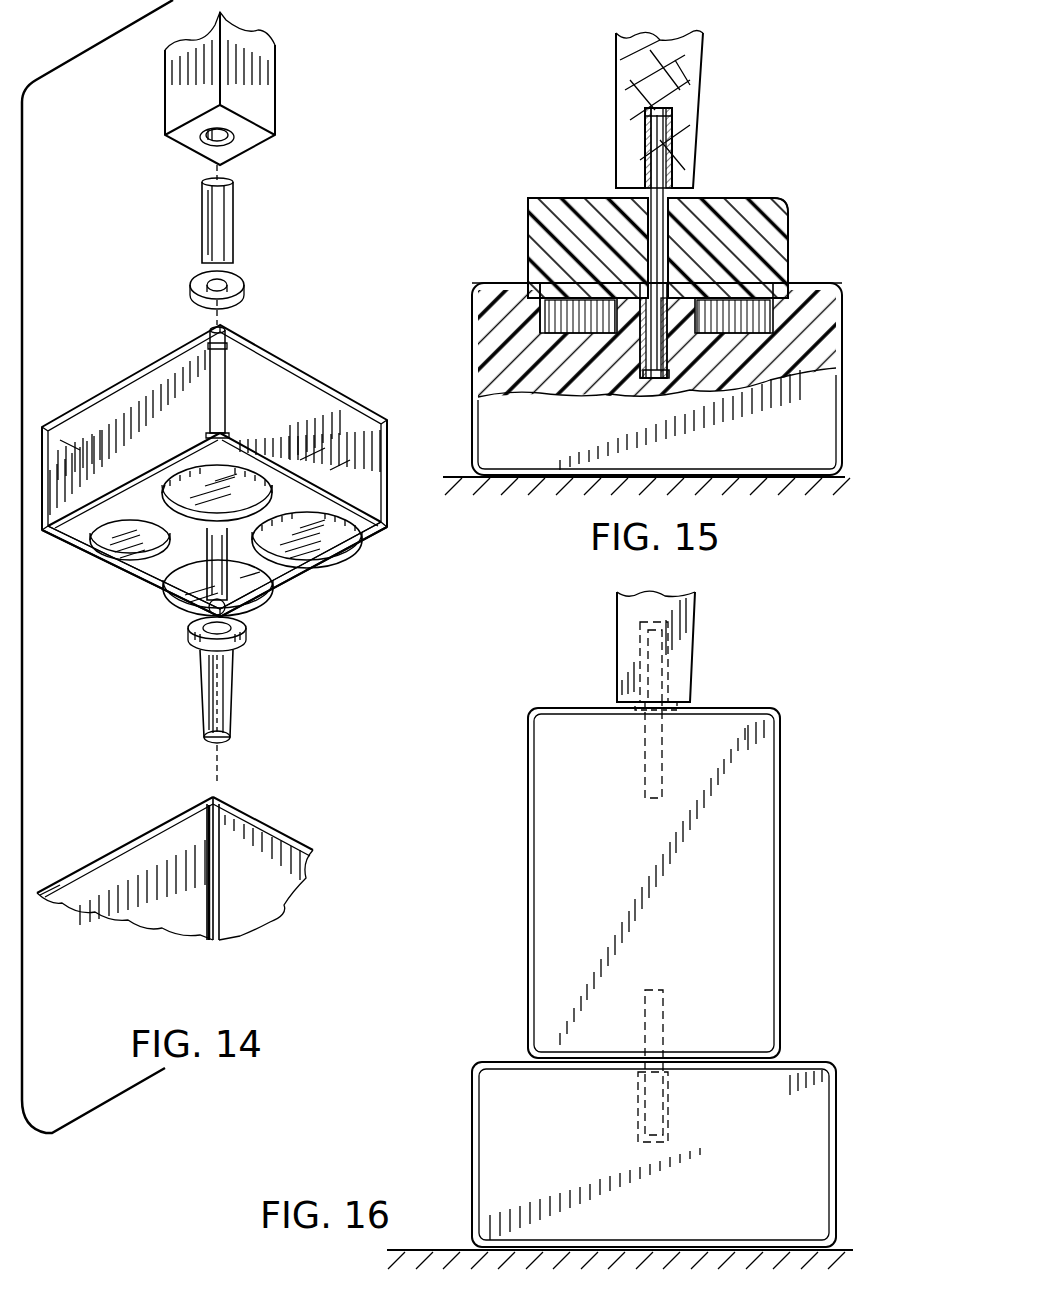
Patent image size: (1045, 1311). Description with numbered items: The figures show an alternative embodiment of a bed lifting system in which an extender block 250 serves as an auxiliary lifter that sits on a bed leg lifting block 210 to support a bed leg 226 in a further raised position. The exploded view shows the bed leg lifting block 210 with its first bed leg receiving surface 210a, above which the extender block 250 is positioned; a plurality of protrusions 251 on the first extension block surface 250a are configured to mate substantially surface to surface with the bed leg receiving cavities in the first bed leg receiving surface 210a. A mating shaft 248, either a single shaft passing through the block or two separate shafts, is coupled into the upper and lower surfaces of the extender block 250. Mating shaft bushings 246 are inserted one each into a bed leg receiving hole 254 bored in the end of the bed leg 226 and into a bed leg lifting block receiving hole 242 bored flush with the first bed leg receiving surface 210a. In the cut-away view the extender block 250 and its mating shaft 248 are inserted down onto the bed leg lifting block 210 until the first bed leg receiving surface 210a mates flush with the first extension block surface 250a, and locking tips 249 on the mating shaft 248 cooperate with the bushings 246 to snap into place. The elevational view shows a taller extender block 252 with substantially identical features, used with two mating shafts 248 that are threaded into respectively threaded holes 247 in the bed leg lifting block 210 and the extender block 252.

In FIG. 14, the bed leg lifting block 210 is at (275, 906).
In FIG. 15, the bed leg lifting block 210 is at (795, 461).
In FIG. 16, the bed leg lifting block 210 is at (785, 1219).
In FIG. 14, the first bed leg receiving surface 210a is at (248, 793).
In FIG. 15, the first bed leg receiving surface 210a is at (509, 260).
In FIG. 14, the bed leg 226 is at (265, 80).
In FIG. 15, the bed leg 226 is at (707, 43).
In FIG. 16, the bed leg 226 is at (630, 637).
In FIG. 15, the bed leg lifting block receiving hole 242 is at (640, 363).
In FIG. 14, the mating shaft bushings 246 is at (235, 235).
In FIG. 15, the mating shaft bushings 246 is at (645, 140).
In FIG. 16, the threaded holes 247 is at (668, 684).
In FIG. 14, the mating shaft 248 is at (205, 410).
In FIG. 15, the mating shaft 248 is at (667, 250).
In FIG. 16, the mating shaft 248 is at (645, 735).
In FIG. 14, the locking tips 249 is at (245, 622).
In FIG. 15, the locking tips 249 is at (645, 125).
In FIG. 14, the extender block 250 is at (250, 370).
In FIG. 14, the first extension block surface 250a is at (285, 570).
In FIG. 15, the first extension block surface 250a is at (768, 272).
In FIG. 14, the protrusions 251 is at (340, 555).
In FIG. 16, the extender block 252 is at (615, 869).
In FIG. 14, the bed leg receiving hole 254 is at (225, 150).
In FIG. 15, the bed leg receiving hole 254 is at (640, 165).